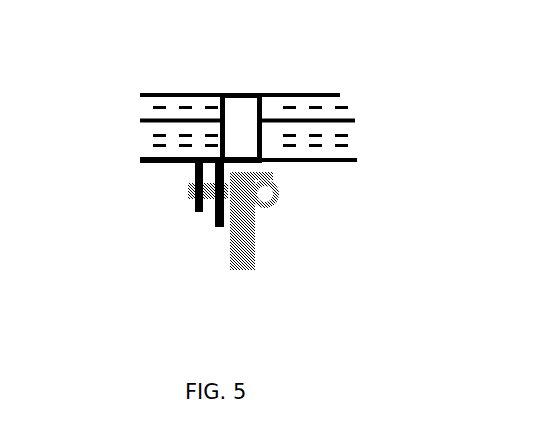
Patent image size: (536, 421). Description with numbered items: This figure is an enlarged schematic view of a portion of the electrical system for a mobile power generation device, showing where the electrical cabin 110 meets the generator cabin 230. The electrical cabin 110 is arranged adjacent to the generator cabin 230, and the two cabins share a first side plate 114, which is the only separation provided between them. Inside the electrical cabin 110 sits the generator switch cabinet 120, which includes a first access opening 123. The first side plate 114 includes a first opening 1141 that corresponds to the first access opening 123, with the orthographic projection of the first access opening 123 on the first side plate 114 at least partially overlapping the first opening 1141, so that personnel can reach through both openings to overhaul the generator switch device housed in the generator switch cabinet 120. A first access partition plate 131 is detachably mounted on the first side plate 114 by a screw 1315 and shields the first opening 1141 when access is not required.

The electrical cabin 110 is at (153, 80).
The first side plate 114 is at (274, 88).
The generator switch cabinet 120 is at (162, 129).
The generator cabin 230 is at (326, 103).
The first access opening 123 is at (140, 209).
The first opening 1141 is at (155, 259).
The first access partition plate 131 is at (289, 265).
The screw 1315 is at (344, 269).